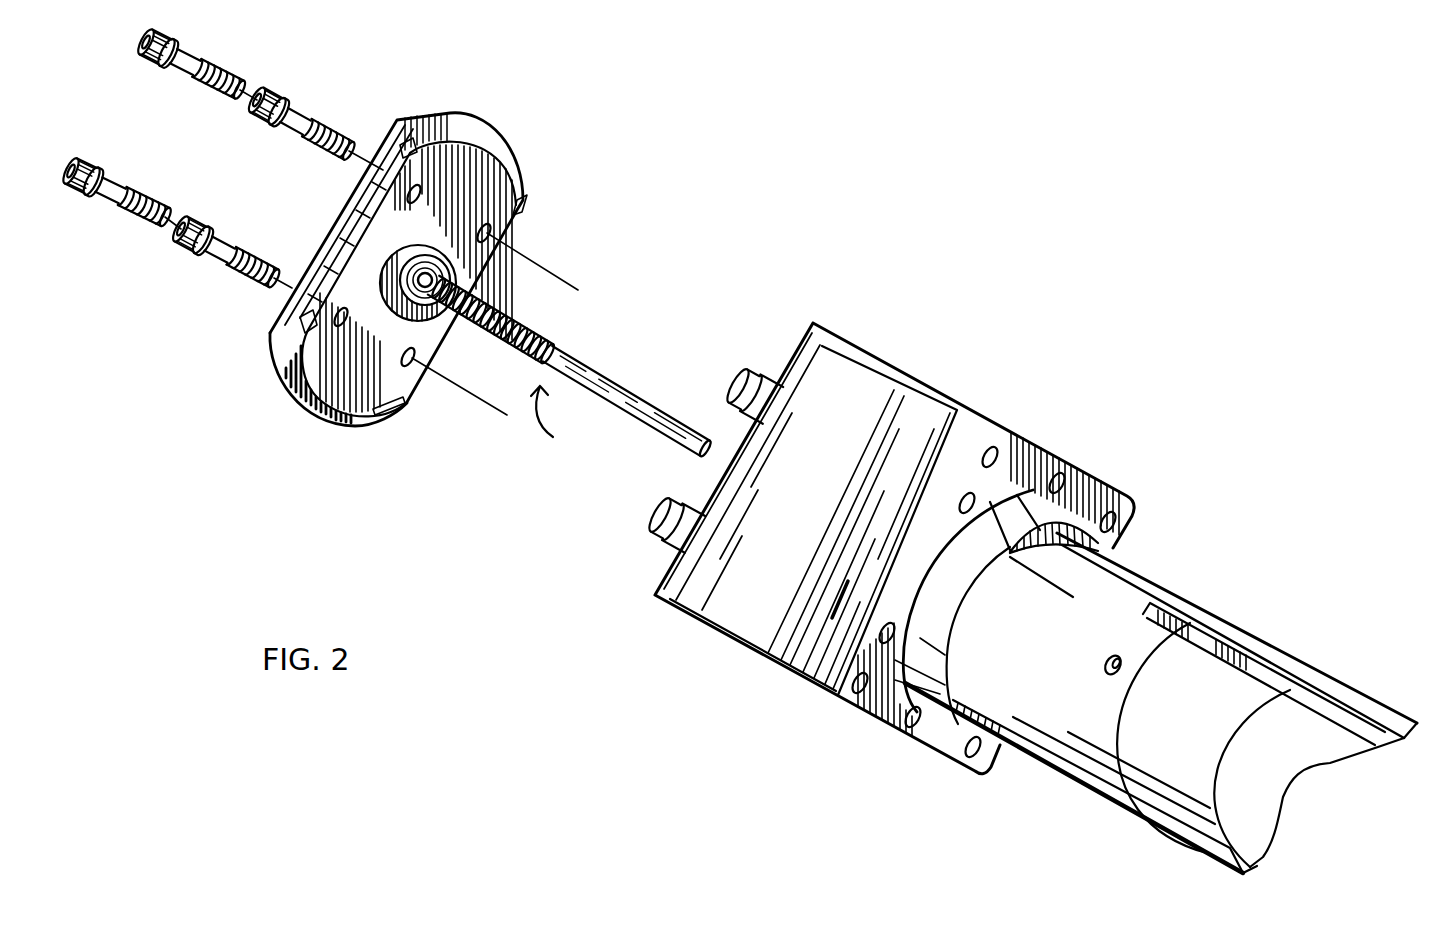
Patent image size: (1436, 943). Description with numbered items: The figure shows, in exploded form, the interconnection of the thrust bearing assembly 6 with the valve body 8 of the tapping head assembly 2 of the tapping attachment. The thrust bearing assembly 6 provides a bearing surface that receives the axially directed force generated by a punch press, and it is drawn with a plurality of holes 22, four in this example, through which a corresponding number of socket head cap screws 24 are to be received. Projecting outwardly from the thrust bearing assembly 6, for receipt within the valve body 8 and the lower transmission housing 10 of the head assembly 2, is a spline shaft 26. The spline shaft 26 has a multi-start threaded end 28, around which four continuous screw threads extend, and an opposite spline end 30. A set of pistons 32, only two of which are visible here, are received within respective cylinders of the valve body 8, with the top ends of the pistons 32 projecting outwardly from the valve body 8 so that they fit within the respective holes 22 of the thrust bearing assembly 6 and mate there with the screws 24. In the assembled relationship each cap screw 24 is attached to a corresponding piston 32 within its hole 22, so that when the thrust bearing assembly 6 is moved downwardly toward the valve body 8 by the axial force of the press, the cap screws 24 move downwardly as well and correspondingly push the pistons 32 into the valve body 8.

The tapping head assembly 2 is at (1167, 515).
The thrust bearing assembly 6 is at (310, 402).
The valve body 8 is at (758, 653).
The transmission housing 10 is at (1077, 780).
The holes 22 is at (414, 205).
The socket head cap screws 24 is at (193, 47).
The spline shaft 26 is at (558, 424).
The multi-start threaded end 28 is at (546, 338).
The spline end 30 is at (613, 380).
The pistons 32 is at (733, 370).